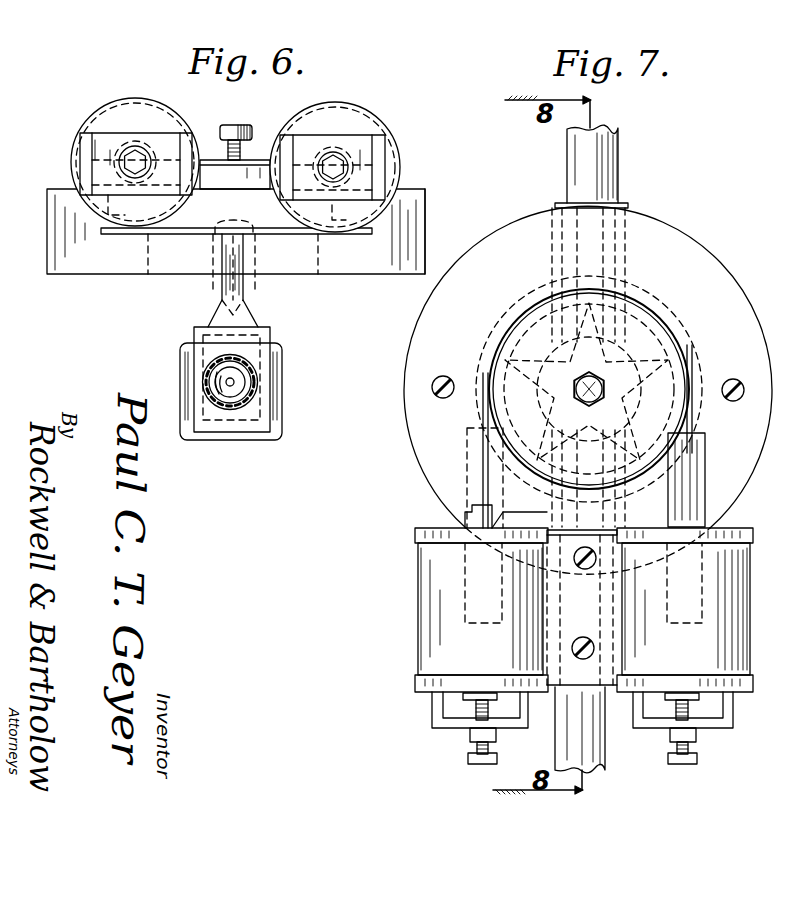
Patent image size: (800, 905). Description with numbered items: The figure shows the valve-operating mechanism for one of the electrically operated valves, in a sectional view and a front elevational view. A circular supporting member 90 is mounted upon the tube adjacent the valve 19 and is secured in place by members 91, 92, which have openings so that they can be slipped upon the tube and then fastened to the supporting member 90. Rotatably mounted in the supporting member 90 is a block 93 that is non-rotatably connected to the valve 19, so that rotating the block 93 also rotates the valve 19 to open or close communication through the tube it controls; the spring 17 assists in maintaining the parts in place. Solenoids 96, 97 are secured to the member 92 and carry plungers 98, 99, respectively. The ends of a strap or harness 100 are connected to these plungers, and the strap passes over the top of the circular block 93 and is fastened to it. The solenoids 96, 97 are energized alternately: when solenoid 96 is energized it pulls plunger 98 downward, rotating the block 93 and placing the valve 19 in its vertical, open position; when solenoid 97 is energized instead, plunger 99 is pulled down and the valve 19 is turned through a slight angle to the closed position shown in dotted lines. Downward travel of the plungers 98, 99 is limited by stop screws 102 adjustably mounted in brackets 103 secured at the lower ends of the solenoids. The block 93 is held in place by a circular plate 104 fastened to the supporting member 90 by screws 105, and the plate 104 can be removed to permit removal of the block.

In FIG. 6, the shaft 17 is at (258, 381).
In FIG. 7, the shaft 17 is at (612, 166).
In FIG. 6, the valve 19 is at (212, 322).
In FIG. 7, the valve 19 is at (552, 288).
In FIG. 6, the circular supporting member 90 is at (342, 265).
In FIG. 7, the securing member 91 is at (632, 242).
In FIG. 6, the securing member 92 is at (235, 323).
In FIG. 7, the securing member 92 is at (548, 516).
In FIG. 6, the block 93 is at (222, 178).
In FIG. 7, the block 93 is at (665, 380).
In FIG. 6, the solenoid 96 is at (105, 120).
In FIG. 7, the solenoid 96 is at (437, 610).
In FIG. 6, the solenoid 97 is at (363, 130).
In FIG. 7, the solenoid 97 is at (737, 627).
In FIG. 7, the plunger 98 is at (465, 518).
In FIG. 7, the plunger 99 is at (693, 465).
In FIG. 6, the strap or harness 100 is at (260, 160).
In FIG. 7, the strap or harness 100 is at (688, 352).
In FIG. 6, the stop screw 102 is at (145, 160).
In FIG. 7, the stop screw 102 is at (477, 709).
In FIG. 6, the bracket 103 is at (88, 148).
In FIG. 7, the bracket 103 is at (462, 722).
In FIG. 6, the circular plate 104 is at (412, 197).
In FIG. 7, the circular plate 104 is at (700, 265).
In FIG. 7, the screw 105 is at (442, 376).